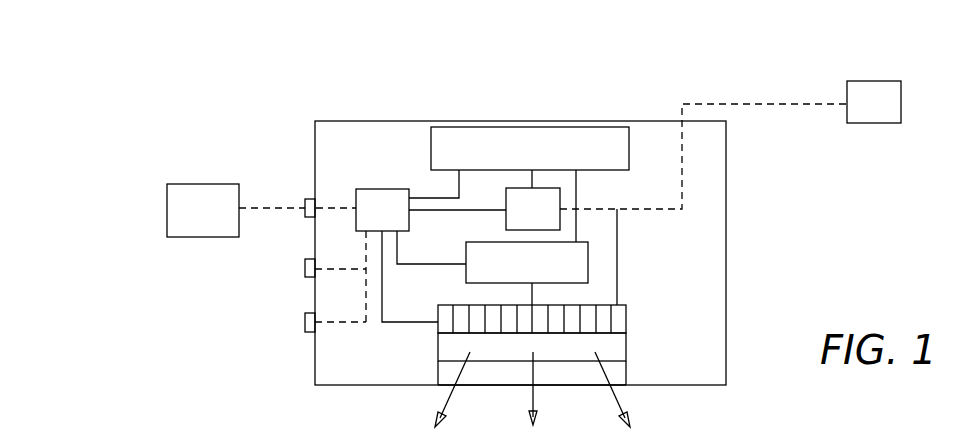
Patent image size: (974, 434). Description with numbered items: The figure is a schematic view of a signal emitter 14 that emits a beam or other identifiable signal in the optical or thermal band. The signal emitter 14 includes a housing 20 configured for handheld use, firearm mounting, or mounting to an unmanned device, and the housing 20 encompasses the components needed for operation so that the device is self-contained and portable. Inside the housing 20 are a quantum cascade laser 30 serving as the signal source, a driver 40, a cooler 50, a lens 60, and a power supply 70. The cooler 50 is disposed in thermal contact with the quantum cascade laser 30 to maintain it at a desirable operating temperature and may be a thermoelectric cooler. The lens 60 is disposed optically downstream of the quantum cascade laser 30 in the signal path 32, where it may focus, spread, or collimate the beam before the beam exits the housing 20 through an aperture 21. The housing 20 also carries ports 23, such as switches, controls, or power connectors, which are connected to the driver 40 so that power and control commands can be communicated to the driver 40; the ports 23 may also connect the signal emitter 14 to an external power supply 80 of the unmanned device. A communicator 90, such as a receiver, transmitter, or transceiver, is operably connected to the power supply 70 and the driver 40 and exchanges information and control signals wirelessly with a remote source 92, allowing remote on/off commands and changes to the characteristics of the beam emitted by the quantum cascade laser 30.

The signal emitter 14 is at (712, 84).
The housing 20 is at (726, 183).
The aperture 21 is at (621, 382).
The ports 23 is at (305, 200).
The quantum cascade laser 30 is at (626, 323).
The signal path 32 is at (446, 398).
The driver 40 is at (369, 220).
The cooler 50 is at (514, 271).
The lens 60 is at (626, 370).
The power supply 70 is at (517, 154).
The power supply 80 is at (190, 222).
The communicator 90 is at (520, 219).
The remote source 92 is at (861, 114).